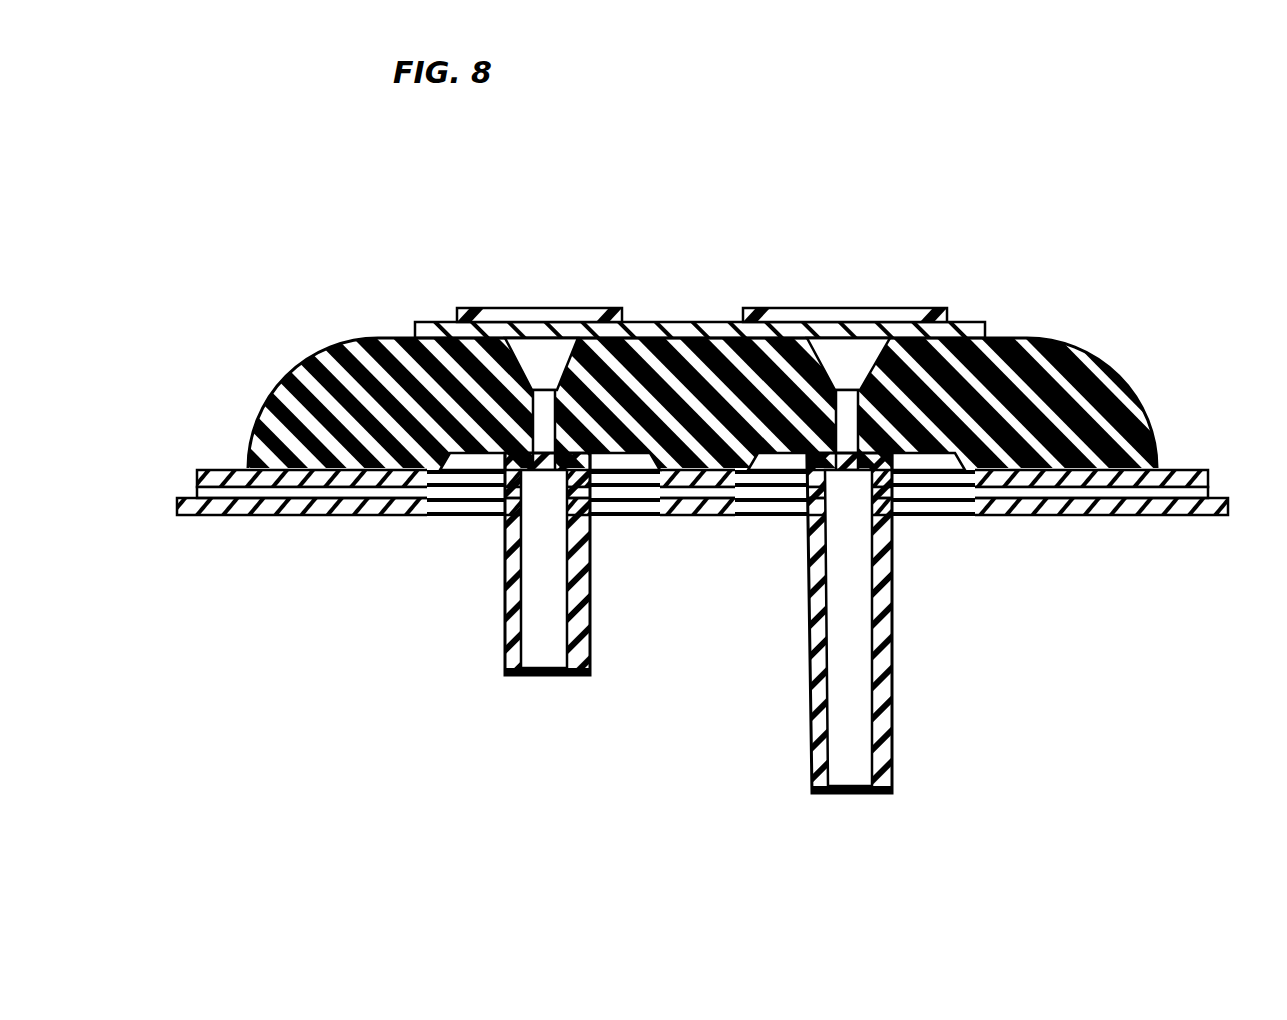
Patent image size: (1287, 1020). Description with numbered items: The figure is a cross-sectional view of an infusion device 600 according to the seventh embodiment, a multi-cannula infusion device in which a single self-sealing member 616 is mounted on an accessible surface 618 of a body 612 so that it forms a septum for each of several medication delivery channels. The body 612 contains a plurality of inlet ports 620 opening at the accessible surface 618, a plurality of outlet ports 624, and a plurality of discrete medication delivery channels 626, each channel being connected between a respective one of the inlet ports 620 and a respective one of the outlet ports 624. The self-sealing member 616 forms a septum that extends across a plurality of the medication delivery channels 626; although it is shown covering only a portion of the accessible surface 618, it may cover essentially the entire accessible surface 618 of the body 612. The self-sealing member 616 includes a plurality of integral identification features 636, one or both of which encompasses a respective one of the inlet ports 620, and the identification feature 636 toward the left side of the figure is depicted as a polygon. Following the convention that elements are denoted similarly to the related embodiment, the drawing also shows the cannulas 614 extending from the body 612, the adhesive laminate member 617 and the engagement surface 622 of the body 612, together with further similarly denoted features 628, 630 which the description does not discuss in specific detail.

The infusion device 600 is at (390, 227).
The body 612 is at (1083, 355).
The cannulas 614 is at (590, 645).
The self-sealing member 616 is at (658, 320).
The adhesive laminate member 617 is at (165, 465).
The accessible surface 618 is at (362, 340).
The inlet ports 620 is at (508, 330).
The engagement surface 622 is at (332, 468).
The outlet ports 624 is at (540, 482).
The discrete medication delivery channels 626 is at (545, 413).
The socket bottom end 628 is at (542, 655).
The via hole 630 is at (568, 338).
The integral identification features 636 is at (470, 306).